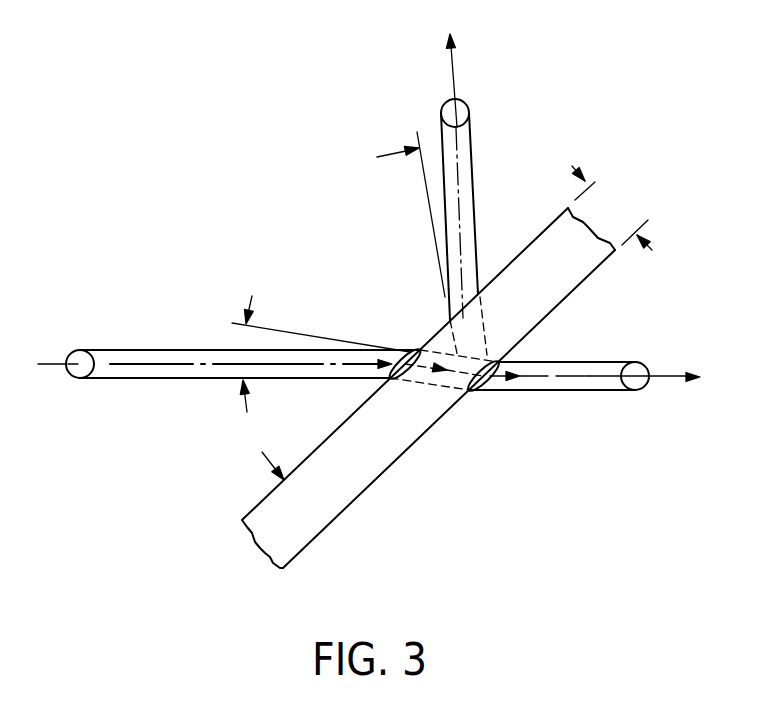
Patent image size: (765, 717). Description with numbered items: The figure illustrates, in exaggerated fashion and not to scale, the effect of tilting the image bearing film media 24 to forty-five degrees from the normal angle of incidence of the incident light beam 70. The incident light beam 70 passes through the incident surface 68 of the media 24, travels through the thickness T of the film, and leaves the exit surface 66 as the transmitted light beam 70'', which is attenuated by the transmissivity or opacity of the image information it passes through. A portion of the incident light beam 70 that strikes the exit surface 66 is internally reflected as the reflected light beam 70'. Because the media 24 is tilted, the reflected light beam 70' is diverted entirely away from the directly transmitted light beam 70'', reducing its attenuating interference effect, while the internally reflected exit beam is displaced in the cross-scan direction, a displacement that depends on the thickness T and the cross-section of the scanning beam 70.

The image bearing film media 24 is at (422, 372).
The exit surface 66 is at (323, 533).
The incident surface 68 is at (255, 507).
The incident light beam 70 is at (268, 372).
The reflected light beam 70' is at (440, 196).
The transmitted light beam 70'' is at (599, 353).